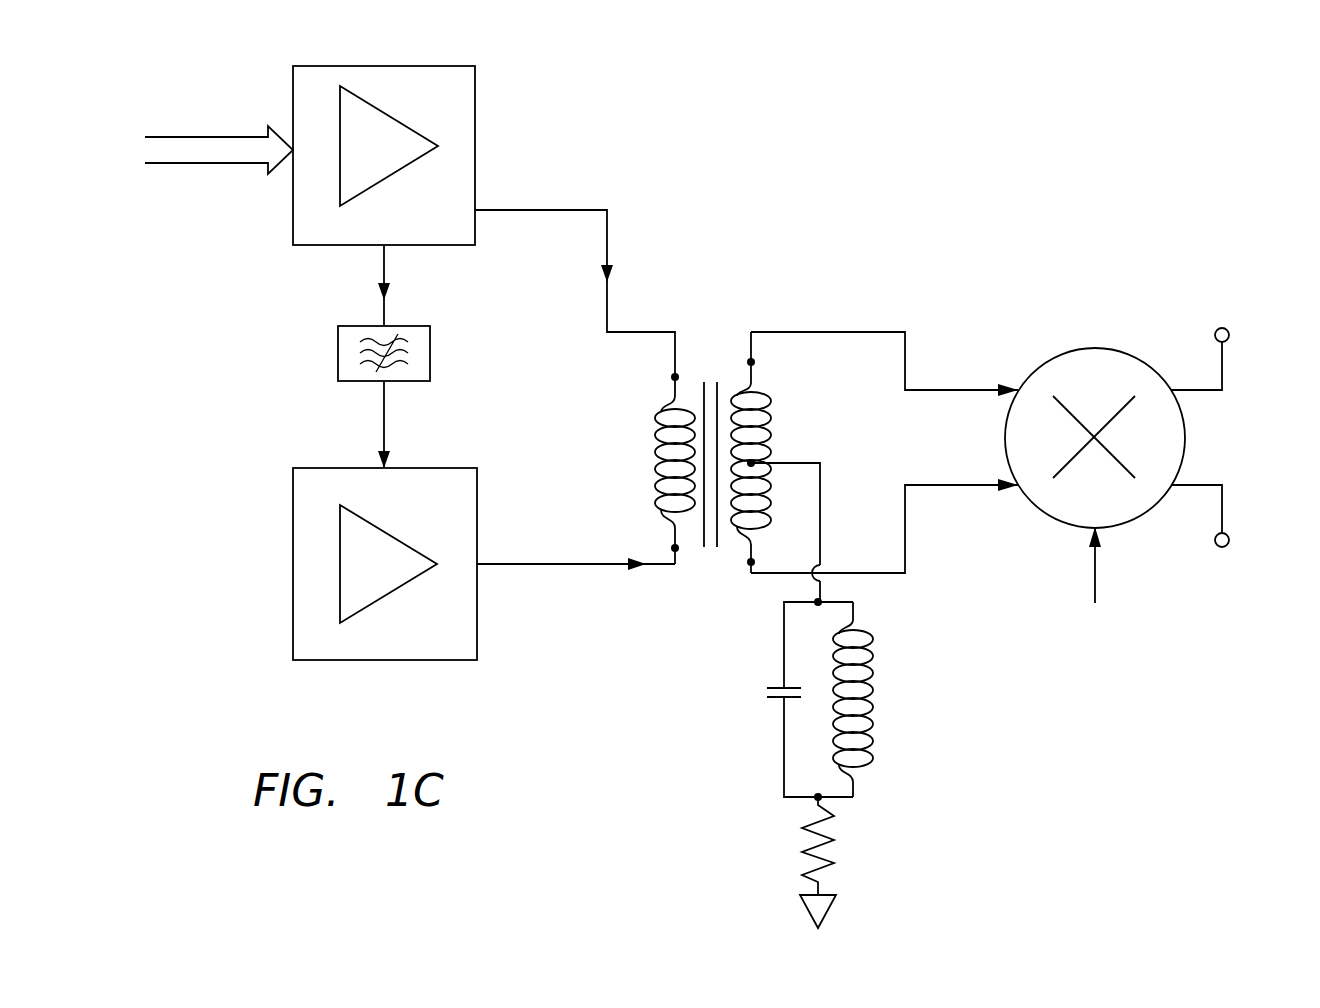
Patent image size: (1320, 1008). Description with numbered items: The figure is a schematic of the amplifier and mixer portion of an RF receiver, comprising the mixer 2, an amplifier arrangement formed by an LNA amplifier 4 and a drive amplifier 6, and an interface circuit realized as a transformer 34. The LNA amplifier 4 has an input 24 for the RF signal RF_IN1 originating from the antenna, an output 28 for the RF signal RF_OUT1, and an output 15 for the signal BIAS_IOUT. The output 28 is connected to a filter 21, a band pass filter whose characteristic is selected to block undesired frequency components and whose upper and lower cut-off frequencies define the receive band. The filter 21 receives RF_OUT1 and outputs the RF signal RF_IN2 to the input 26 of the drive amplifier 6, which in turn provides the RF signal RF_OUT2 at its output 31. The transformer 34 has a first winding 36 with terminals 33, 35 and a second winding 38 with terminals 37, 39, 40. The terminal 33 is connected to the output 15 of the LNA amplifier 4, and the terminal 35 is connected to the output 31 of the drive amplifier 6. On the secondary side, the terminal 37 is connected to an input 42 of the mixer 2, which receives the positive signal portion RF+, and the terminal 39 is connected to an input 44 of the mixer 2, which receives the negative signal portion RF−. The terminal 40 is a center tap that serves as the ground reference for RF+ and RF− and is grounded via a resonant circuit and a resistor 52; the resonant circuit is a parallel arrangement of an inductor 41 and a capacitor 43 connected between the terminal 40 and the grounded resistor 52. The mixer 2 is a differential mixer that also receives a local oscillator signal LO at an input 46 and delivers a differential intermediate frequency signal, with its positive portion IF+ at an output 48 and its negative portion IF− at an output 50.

The mixer 2 is at (1098, 346).
The LNA amplifier 4 is at (478, 84).
The drive amplifier 6 is at (438, 466).
The output 15 is at (478, 204).
The filter 21 is at (337, 360).
The input 24 is at (291, 135).
The input 26 is at (380, 465).
The output 28 is at (381, 248).
The output 31 is at (478, 570).
The terminal 33 is at (672, 375).
The transformer 34 is at (724, 336).
The terminal 35 is at (676, 551).
The first winding 36 is at (656, 438).
The terminal 37 is at (754, 360).
The second winding 38 is at (758, 394).
The terminal 39 is at (751, 565).
The terminal 40 is at (757, 461).
The inductor 41 is at (878, 681).
The input 42 is at (1018, 386).
The capacitor 43 is at (776, 688).
The input 44 is at (1010, 480).
The input 46 is at (1100, 532).
The output 48 is at (1179, 386).
The output 50 is at (1180, 474).
The resistor 52 is at (840, 838).